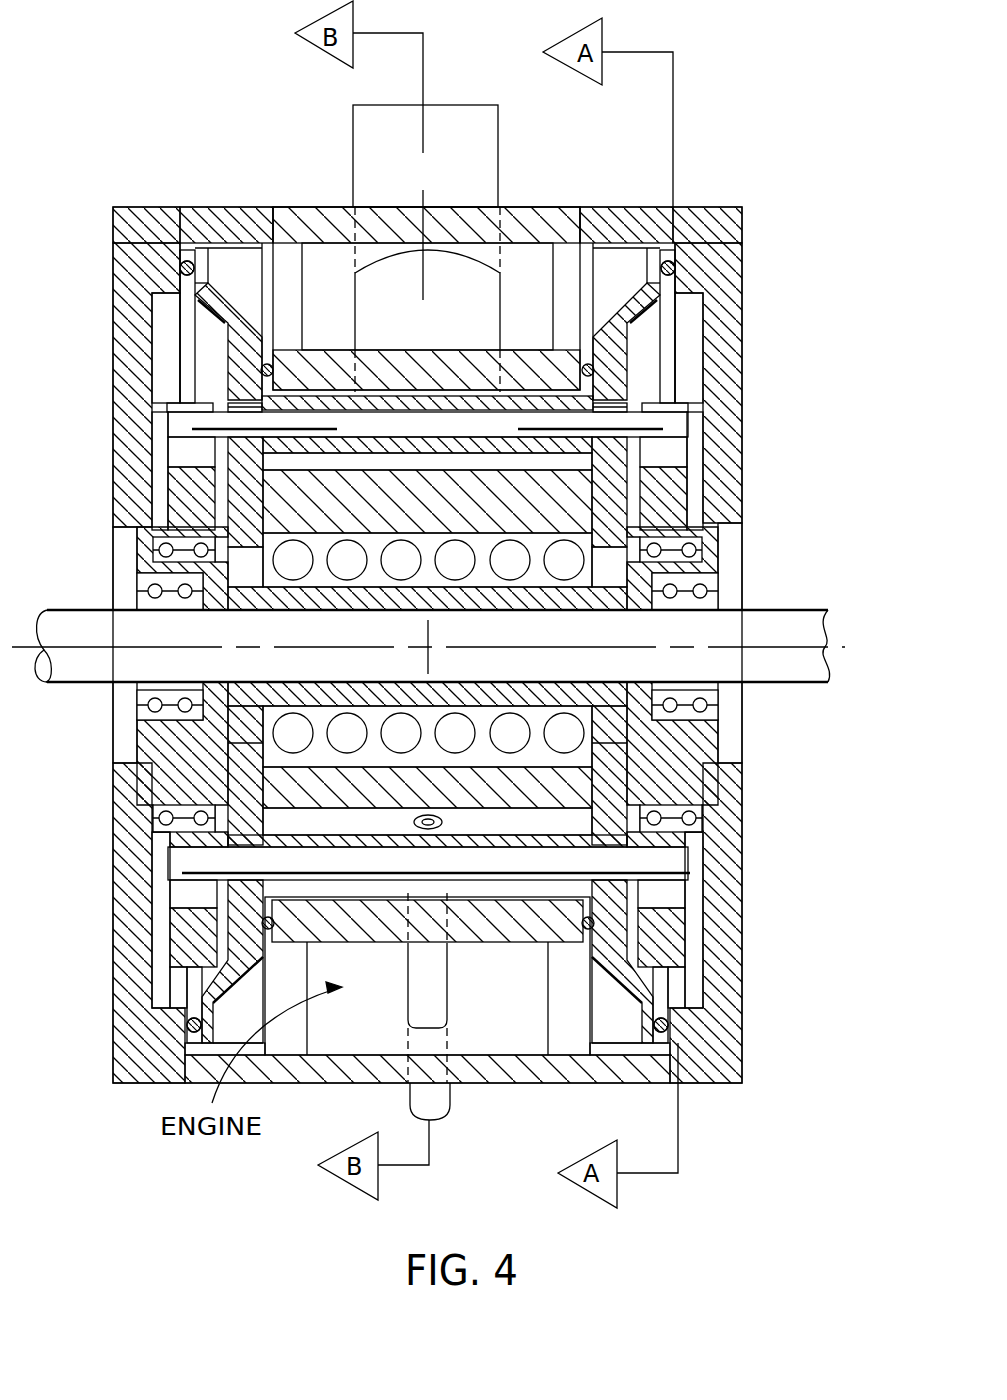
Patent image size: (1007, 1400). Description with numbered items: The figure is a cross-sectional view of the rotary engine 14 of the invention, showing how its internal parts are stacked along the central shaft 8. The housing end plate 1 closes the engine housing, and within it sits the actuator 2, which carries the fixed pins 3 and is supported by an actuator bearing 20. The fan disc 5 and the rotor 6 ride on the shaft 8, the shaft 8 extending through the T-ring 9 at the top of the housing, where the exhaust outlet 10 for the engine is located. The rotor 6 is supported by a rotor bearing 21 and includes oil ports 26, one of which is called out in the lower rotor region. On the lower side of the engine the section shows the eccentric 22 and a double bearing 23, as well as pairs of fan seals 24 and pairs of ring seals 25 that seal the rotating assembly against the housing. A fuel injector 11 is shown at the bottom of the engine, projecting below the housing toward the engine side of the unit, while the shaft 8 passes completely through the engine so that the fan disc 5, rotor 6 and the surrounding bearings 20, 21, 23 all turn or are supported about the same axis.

The housing end plate 1 is at (742, 244).
The actuator 2 is at (677, 466).
The fixed pins 3 is at (677, 417).
The fan disc 5 is at (628, 291).
The rotor 6 is at (496, 766).
The shaft 8 is at (806, 610).
The T-ring 9 is at (527, 207).
The exhaust outlet 10 is at (407, 170).
The fuel injector 11 is at (450, 1112).
The rotary engine 14 is at (72, 954).
The actuator bearing 20 is at (705, 521).
The rotor bearing 21 is at (717, 577).
The eccentric 22 is at (690, 767).
The double bearing 23 is at (673, 888).
The fan seals 24 is at (669, 1027).
The ring seals 25 is at (700, 930).
The oil ports 26 is at (287, 733).